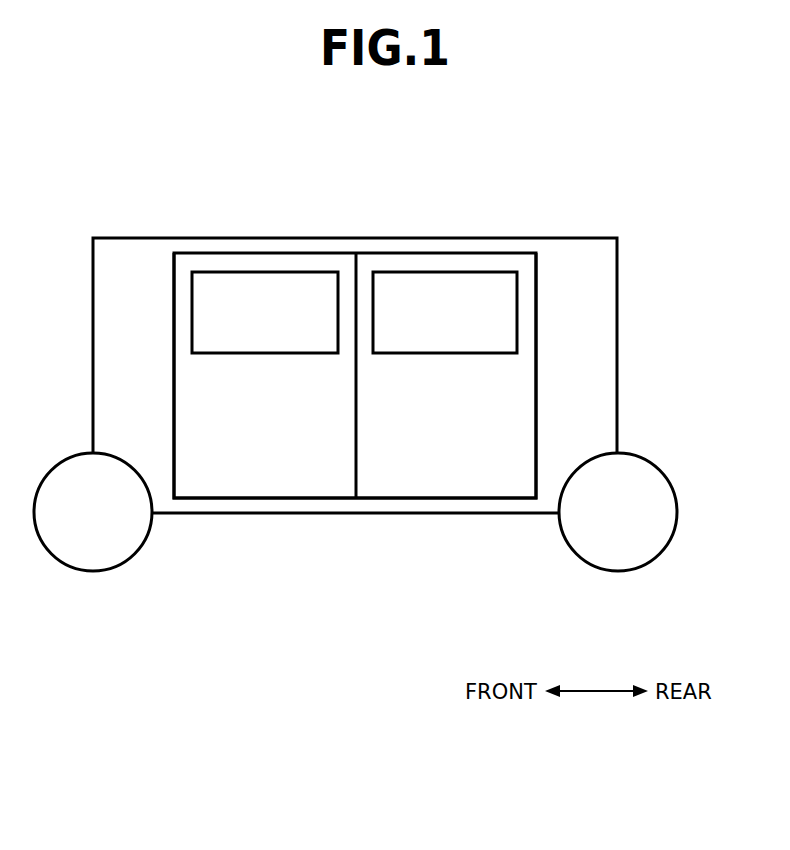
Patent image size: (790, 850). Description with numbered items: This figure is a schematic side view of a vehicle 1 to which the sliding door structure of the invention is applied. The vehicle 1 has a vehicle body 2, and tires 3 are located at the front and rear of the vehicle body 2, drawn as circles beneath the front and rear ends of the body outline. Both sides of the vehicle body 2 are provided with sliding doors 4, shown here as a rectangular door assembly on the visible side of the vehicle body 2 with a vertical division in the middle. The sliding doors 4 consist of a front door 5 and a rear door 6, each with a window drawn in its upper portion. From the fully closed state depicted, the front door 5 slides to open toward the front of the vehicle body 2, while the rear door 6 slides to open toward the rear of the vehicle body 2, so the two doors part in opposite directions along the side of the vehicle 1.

The vehicle 1 is at (451, 213).
The vehicle body 2 is at (580, 247).
The tires 3 is at (70, 477).
The sliding doors 4 is at (301, 252).
The front door 5 is at (296, 487).
The rear door 6 is at (448, 487).